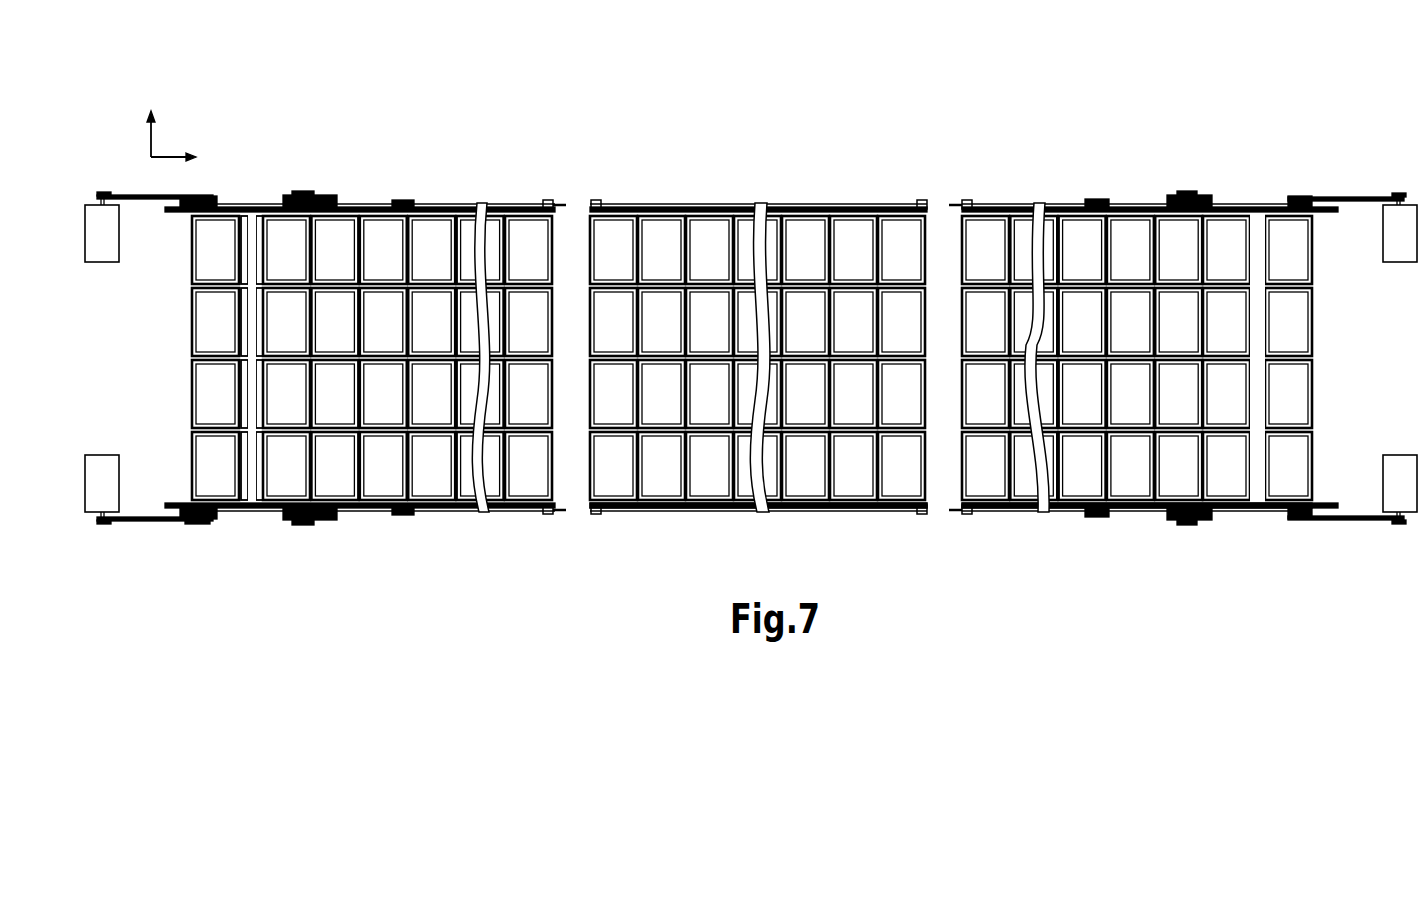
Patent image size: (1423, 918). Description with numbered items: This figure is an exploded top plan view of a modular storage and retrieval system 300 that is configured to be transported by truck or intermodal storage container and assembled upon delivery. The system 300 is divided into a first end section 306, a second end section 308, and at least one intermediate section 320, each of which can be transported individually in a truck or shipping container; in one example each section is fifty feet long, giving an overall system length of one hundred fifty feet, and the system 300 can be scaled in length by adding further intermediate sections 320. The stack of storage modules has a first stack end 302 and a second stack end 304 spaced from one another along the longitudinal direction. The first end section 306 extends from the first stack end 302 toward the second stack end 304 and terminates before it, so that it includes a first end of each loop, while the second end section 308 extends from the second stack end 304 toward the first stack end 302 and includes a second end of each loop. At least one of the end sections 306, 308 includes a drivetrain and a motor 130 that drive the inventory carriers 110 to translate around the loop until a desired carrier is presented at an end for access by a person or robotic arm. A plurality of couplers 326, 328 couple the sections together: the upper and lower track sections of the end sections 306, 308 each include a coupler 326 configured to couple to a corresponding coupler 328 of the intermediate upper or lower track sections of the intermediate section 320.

The modular storage and retrieval system 300 is at (761, 97).
The inventory carrier 110 is at (519, 209).
The motor 130 is at (113, 242).
The first stack end 302 is at (1251, 532).
The second stack end 304 is at (226, 538).
The first end section 306 is at (1045, 525).
The second end section 308 is at (386, 540).
The intermediate section 320 is at (652, 525).
The coupler 326 is at (549, 200).
The coupler 328 is at (598, 201).